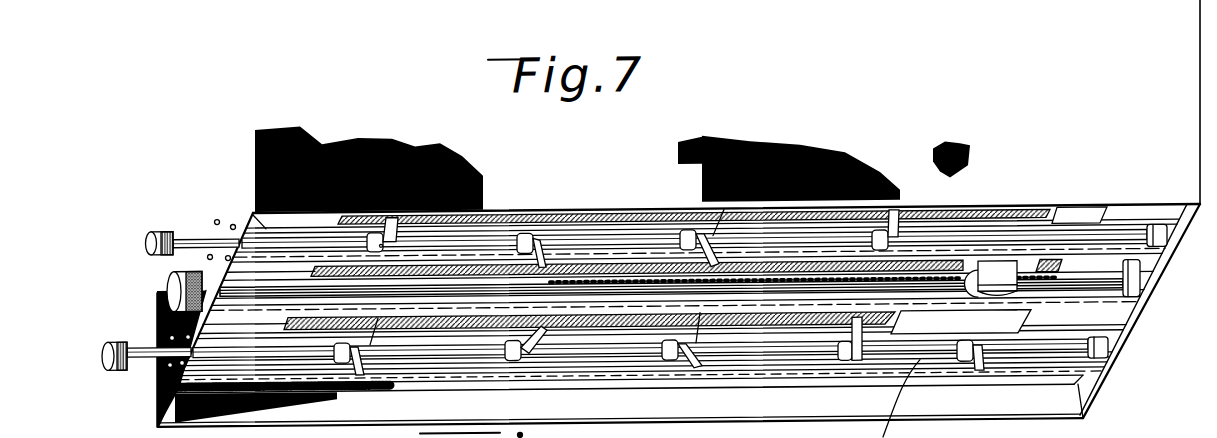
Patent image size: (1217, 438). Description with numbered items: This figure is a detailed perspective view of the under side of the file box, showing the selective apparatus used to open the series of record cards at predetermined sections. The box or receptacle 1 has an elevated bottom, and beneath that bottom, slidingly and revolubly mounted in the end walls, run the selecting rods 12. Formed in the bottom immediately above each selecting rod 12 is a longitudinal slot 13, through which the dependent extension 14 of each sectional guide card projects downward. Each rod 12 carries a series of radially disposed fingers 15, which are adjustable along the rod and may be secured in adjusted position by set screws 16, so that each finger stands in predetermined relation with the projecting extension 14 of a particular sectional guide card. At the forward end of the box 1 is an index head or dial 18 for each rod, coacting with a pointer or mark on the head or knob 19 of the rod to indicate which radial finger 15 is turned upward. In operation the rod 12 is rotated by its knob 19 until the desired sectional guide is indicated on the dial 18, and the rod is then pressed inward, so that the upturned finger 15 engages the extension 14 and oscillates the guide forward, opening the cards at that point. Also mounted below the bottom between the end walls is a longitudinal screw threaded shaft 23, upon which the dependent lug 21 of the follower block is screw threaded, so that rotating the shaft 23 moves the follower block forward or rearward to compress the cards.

The box or receptacle 1 is at (265, 157).
The selecting rod 12 is at (483, 242).
The longitudinal slot 13 is at (1052, 225).
The dependent extension 14 is at (575, 215).
The radially disposed finger 15 is at (712, 236).
The set screw 16 is at (540, 235).
The index head or dial 18 is at (227, 233).
The head or knob 19 is at (145, 245).
The dependent lug 21 is at (997, 278).
The screw threaded shaft 23 is at (172, 292).